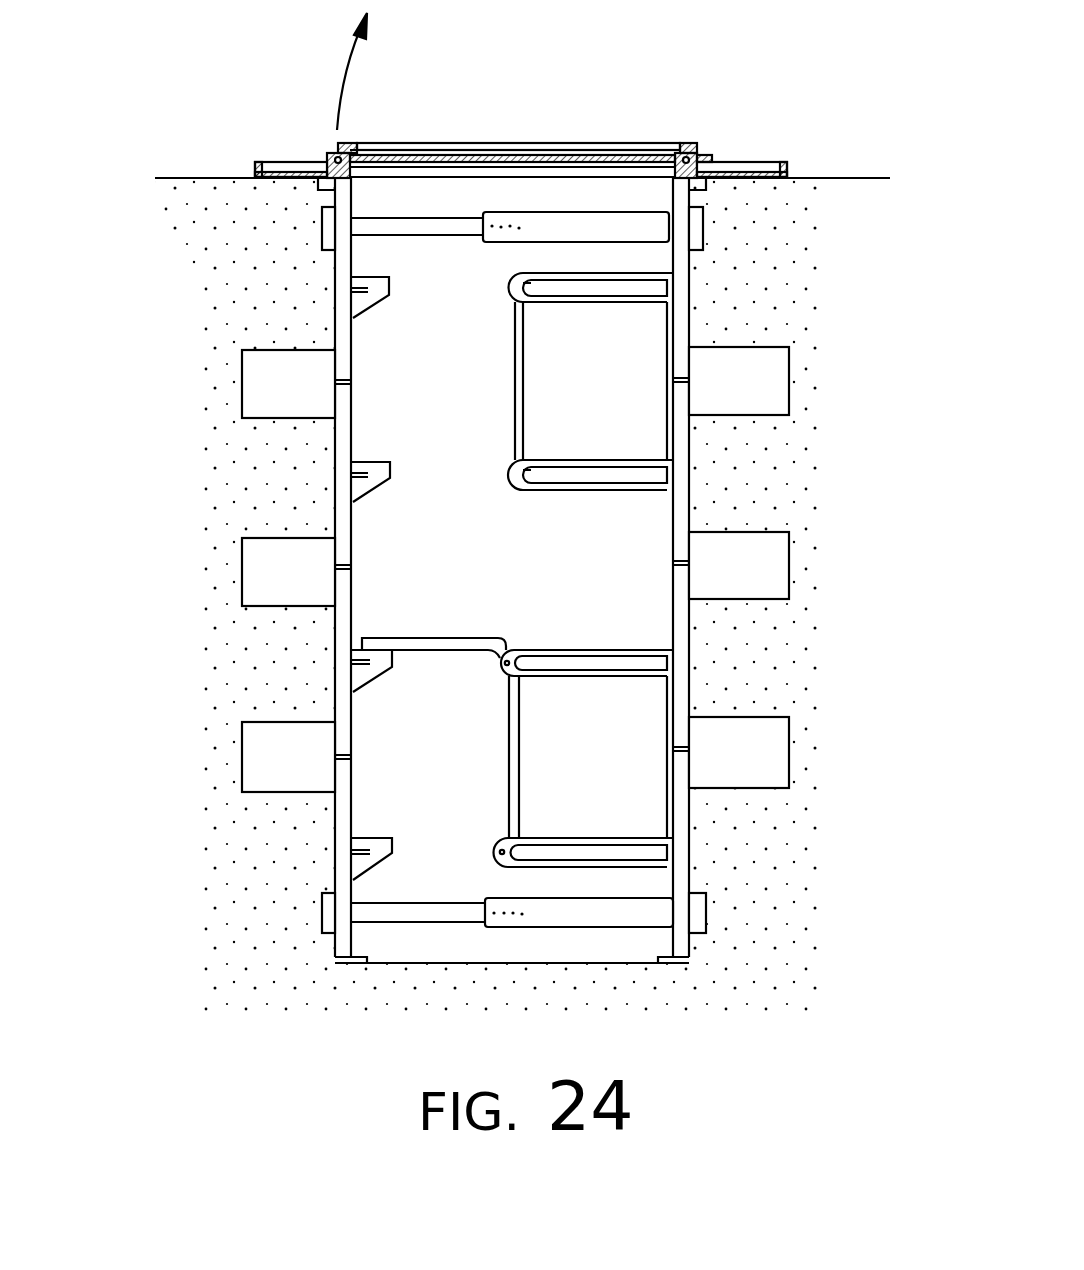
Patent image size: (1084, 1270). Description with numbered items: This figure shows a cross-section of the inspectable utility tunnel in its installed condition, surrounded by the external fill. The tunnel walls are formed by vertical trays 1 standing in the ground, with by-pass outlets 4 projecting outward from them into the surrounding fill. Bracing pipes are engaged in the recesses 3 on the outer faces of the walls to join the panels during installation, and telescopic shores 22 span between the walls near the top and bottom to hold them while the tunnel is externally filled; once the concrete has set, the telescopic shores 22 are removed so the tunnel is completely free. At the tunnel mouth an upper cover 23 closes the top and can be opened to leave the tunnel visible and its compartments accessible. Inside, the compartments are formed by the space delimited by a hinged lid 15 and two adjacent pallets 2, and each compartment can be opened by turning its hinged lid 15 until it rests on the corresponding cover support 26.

The vertical tray 1 is at (346, 311).
The pallet 2 is at (646, 660).
The recesses 3 is at (331, 228).
The by-pass outlets 4 is at (247, 395).
The hinged lid 15 is at (510, 718).
The telescopic shores 22 is at (563, 195).
The upper cover 23 is at (483, 158).
The cover support 26 is at (377, 842).